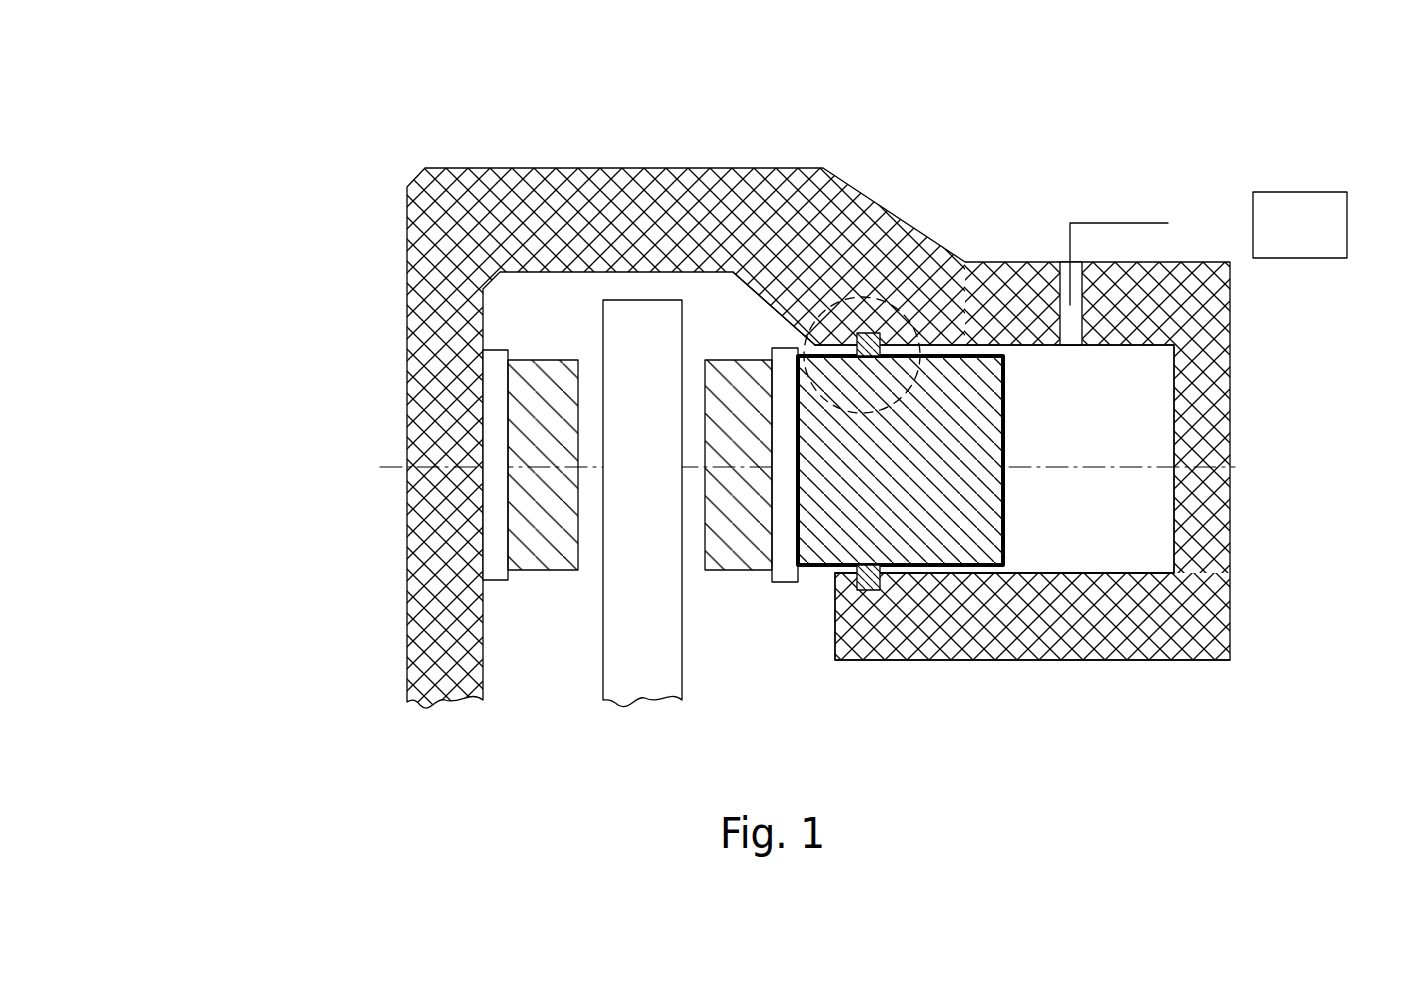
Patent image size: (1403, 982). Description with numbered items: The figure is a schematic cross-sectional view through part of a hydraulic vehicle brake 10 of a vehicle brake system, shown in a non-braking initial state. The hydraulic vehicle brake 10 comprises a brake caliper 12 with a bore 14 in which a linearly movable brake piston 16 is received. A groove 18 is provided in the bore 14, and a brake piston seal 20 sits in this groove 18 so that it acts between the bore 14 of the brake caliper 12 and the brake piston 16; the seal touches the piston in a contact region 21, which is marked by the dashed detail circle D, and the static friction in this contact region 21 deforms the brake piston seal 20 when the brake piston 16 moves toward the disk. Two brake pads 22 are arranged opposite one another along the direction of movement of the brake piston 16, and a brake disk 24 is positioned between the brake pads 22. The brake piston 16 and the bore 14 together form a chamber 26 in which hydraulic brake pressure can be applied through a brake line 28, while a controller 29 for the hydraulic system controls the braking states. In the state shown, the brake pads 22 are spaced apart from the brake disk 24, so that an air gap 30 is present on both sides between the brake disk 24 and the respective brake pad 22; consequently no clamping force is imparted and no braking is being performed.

The hydraulic vehicle brake 10 is at (320, 166).
The brake caliper 12 is at (500, 197).
The bore 14 is at (1058, 577).
The brake piston 16 is at (815, 345).
The groove 18 is at (872, 590).
The brake piston seal 20 is at (870, 580).
The contact region 21 is at (882, 530).
The brake pads 22 is at (542, 550).
The brake disk 24 is at (640, 660).
The chamber 26 is at (1132, 445).
The brake line 28 is at (1118, 223).
The controller 29 is at (1300, 225).
The air gap 30 is at (704, 332).
The detail region D is at (877, 303).